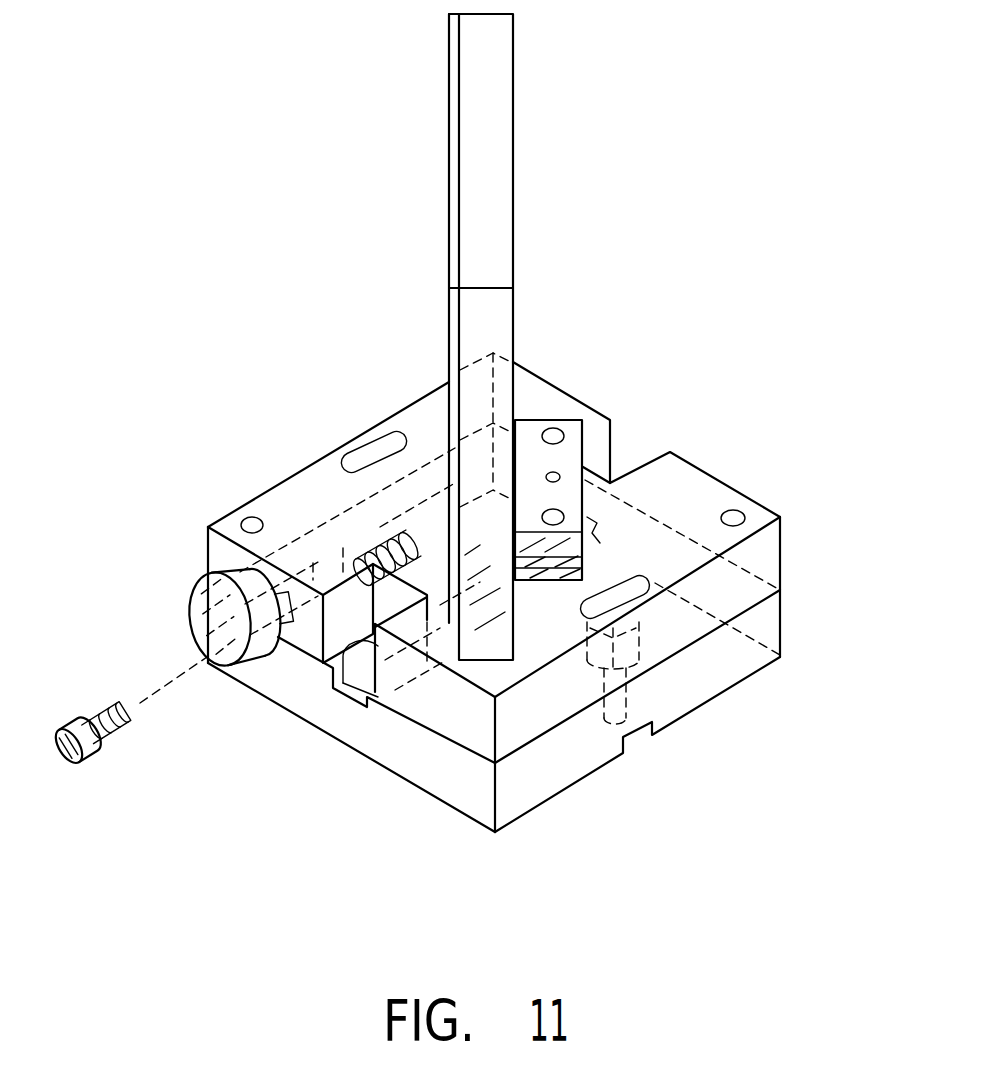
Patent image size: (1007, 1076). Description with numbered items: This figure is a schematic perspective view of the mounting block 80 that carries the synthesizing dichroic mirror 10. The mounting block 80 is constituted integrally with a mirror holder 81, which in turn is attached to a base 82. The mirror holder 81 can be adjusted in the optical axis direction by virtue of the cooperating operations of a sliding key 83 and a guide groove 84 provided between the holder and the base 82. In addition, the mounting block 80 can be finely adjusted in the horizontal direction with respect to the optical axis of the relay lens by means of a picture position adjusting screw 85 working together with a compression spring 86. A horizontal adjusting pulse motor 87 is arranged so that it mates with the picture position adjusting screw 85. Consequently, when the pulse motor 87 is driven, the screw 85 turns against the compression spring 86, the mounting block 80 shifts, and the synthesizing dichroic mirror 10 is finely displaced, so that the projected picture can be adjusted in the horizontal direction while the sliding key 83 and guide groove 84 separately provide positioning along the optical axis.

The synthesizing dichroic mirror 10 is at (450, 128).
The mounting block 80 is at (208, 215).
The mirror holder 81 is at (573, 393).
The base 82 is at (786, 617).
The sliding key 83 is at (522, 593).
The guide groove 84 is at (603, 536).
The picture position adjusting screw 85 is at (98, 713).
The compression spring 86 is at (382, 542).
The horizontal adjusting pulse motor 87 is at (205, 592).